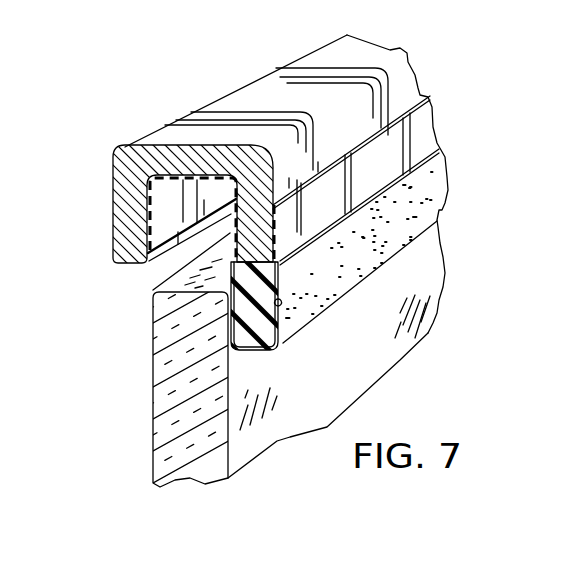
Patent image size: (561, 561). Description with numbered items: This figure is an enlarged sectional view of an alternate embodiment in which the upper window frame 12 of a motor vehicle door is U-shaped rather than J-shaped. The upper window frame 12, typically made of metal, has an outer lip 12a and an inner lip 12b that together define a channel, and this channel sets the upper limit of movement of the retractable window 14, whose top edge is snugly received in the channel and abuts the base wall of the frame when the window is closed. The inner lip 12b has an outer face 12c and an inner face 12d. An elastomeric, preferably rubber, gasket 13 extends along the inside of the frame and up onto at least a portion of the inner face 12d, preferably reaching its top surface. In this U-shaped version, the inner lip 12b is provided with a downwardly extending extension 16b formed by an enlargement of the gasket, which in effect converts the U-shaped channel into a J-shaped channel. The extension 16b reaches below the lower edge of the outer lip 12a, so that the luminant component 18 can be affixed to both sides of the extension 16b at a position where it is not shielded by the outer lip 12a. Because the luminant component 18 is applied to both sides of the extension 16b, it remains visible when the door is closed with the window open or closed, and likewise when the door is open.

The upper window frame 12 is at (265, 97).
The outer lip 12a is at (127, 230).
The inner lip 12b is at (255, 153).
The outer face 12c is at (230, 222).
The inner face 12d is at (283, 305).
The gasket 13 is at (165, 165).
The retractable window 14 is at (351, 369).
The extension 16b is at (260, 337).
The luminant component 18 is at (405, 232).